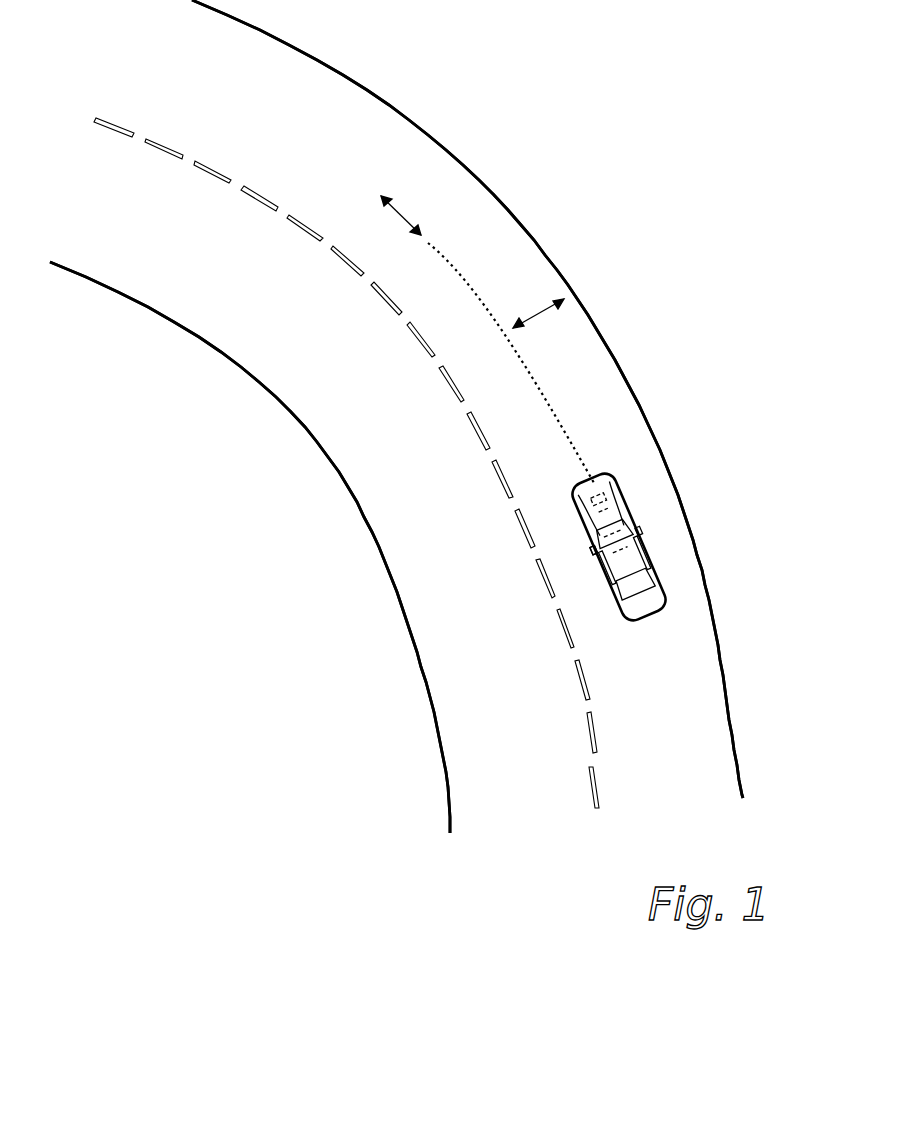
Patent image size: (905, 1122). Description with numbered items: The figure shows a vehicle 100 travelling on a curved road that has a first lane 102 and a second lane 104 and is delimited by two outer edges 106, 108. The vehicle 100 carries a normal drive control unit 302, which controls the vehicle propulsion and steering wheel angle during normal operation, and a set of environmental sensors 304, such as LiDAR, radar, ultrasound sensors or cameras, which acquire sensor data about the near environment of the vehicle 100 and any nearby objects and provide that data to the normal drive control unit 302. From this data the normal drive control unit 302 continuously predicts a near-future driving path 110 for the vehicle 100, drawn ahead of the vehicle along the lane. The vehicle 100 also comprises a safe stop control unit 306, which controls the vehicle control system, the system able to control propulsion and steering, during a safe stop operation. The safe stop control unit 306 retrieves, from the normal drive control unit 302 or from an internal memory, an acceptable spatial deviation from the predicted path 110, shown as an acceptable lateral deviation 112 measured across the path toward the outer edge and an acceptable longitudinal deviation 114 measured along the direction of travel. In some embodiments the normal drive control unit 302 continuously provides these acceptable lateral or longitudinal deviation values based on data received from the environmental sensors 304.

The vehicle 100 is at (645, 545).
The first lane 102 is at (320, 152).
The second lane 104 is at (278, 350).
The outer edge 106 is at (645, 412).
The outer edge 108 is at (412, 634).
The near-future driving path 110 is at (537, 382).
The acceptable lateral deviation 112 is at (541, 314).
The acceptable longitudinal deviation 114 is at (403, 213).
The normal drive control unit 302 is at (618, 508).
The set of environmental sensors 304 is at (590, 498).
The safe stop control unit 306 is at (583, 562).